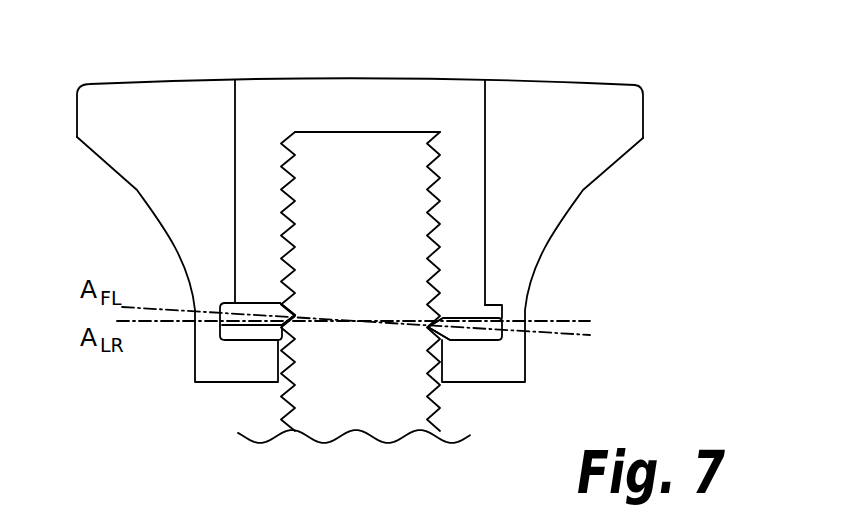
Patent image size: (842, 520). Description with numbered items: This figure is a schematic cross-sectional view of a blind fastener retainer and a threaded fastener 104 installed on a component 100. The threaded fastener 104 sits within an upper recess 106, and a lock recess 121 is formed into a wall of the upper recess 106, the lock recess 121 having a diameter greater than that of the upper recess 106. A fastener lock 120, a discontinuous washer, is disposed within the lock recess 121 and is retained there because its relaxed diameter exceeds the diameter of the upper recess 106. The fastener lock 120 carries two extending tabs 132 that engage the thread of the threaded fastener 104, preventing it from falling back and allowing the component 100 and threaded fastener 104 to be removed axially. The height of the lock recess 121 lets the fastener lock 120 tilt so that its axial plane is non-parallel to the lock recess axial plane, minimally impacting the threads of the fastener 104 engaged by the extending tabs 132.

The component 100 is at (626, 108).
The threaded fastener 104 is at (360, 133).
The upper recess 106 is at (485, 110).
The fastener lock 120 is at (270, 303).
The lock recess 121 is at (487, 318).
The extending tab 132 is at (285, 320).